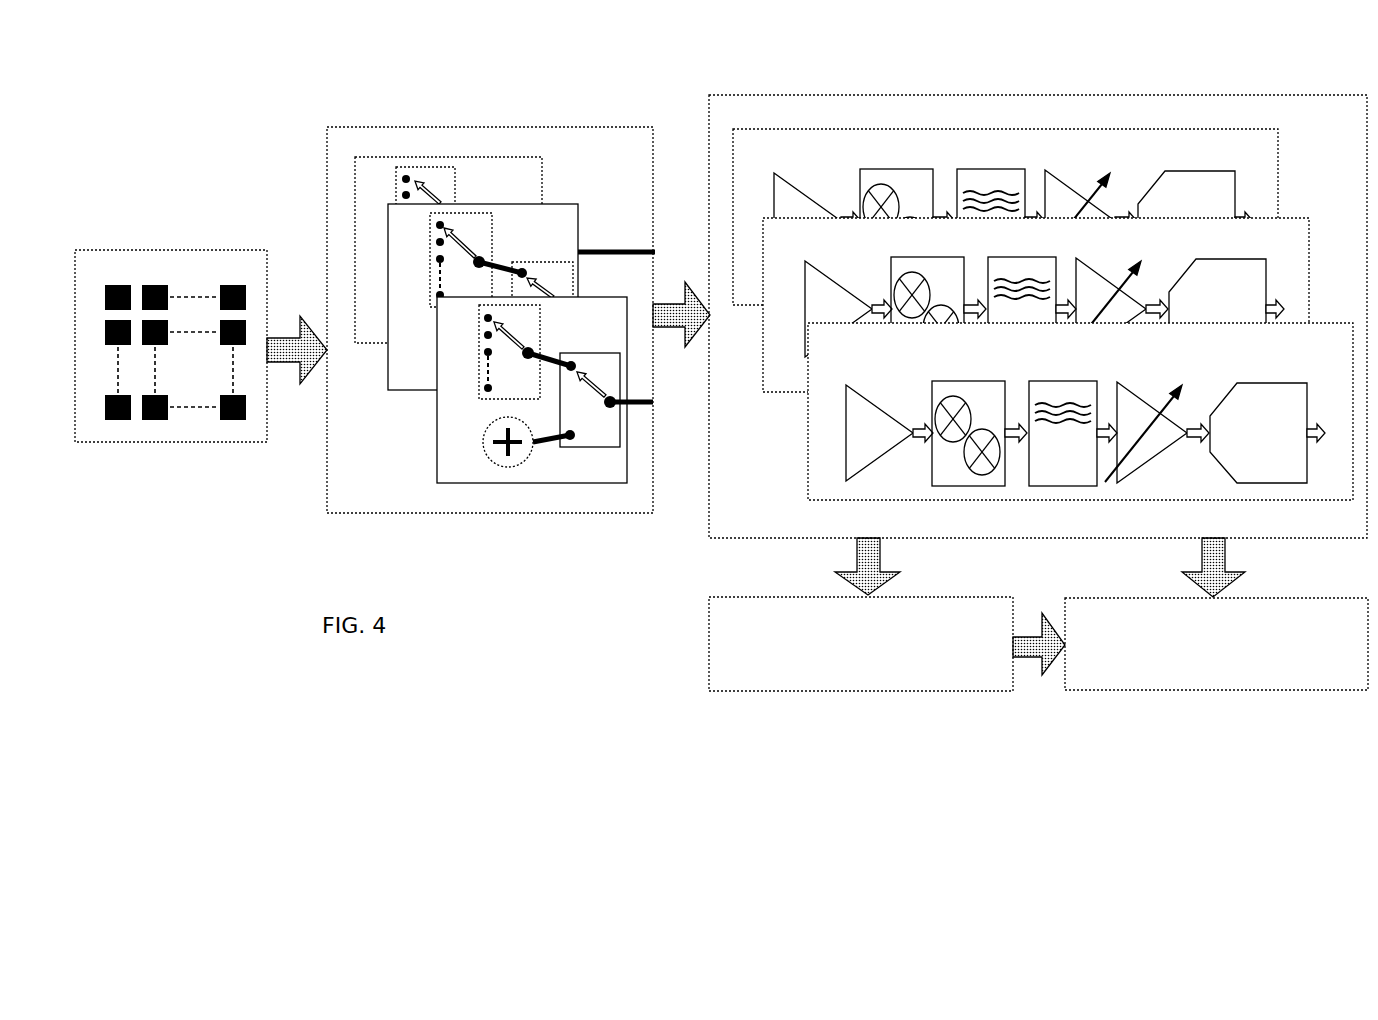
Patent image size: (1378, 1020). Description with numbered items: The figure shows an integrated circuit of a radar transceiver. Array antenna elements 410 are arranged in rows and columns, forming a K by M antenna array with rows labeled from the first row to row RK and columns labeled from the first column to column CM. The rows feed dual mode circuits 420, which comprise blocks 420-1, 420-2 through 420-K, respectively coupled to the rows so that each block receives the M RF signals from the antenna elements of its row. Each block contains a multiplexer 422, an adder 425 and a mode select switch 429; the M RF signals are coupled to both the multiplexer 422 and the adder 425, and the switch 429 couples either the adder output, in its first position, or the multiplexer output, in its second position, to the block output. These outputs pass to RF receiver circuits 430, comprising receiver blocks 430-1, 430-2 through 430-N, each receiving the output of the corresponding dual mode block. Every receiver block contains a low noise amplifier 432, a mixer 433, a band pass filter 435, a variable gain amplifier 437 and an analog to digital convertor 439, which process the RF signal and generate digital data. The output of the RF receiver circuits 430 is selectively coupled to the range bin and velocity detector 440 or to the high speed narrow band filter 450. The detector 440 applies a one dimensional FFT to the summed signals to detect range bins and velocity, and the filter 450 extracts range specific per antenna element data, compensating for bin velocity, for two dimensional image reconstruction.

The array antenna elements 410 is at (167, 249).
The dual mode circuits 420 is at (483, 126).
The dual mode circuit block 420-1 is at (357, 344).
The dual mode circuit block 420-2 is at (400, 391).
The dual mode circuit block 420-K is at (507, 391).
The multiplexer 422 is at (541, 312).
The adder 425 is at (485, 444).
The mode select switch 429 is at (586, 448).
The RF receiver circuits 430 is at (805, 95).
The receiver block 430-1 is at (735, 306).
The receiver block 430-2 is at (778, 393).
The receiver block 430-N is at (1040, 412).
The low noise amplifier 432 is at (899, 444).
The mixer 433 is at (952, 381).
The band pass filter 435 is at (1049, 381).
The variable gain amplifier 437 is at (1132, 391).
The analog to digital convertor 439 is at (1278, 442).
The range bin and velocity detector 440 is at (846, 678).
The high speed narrow band filter 450 is at (1262, 665).